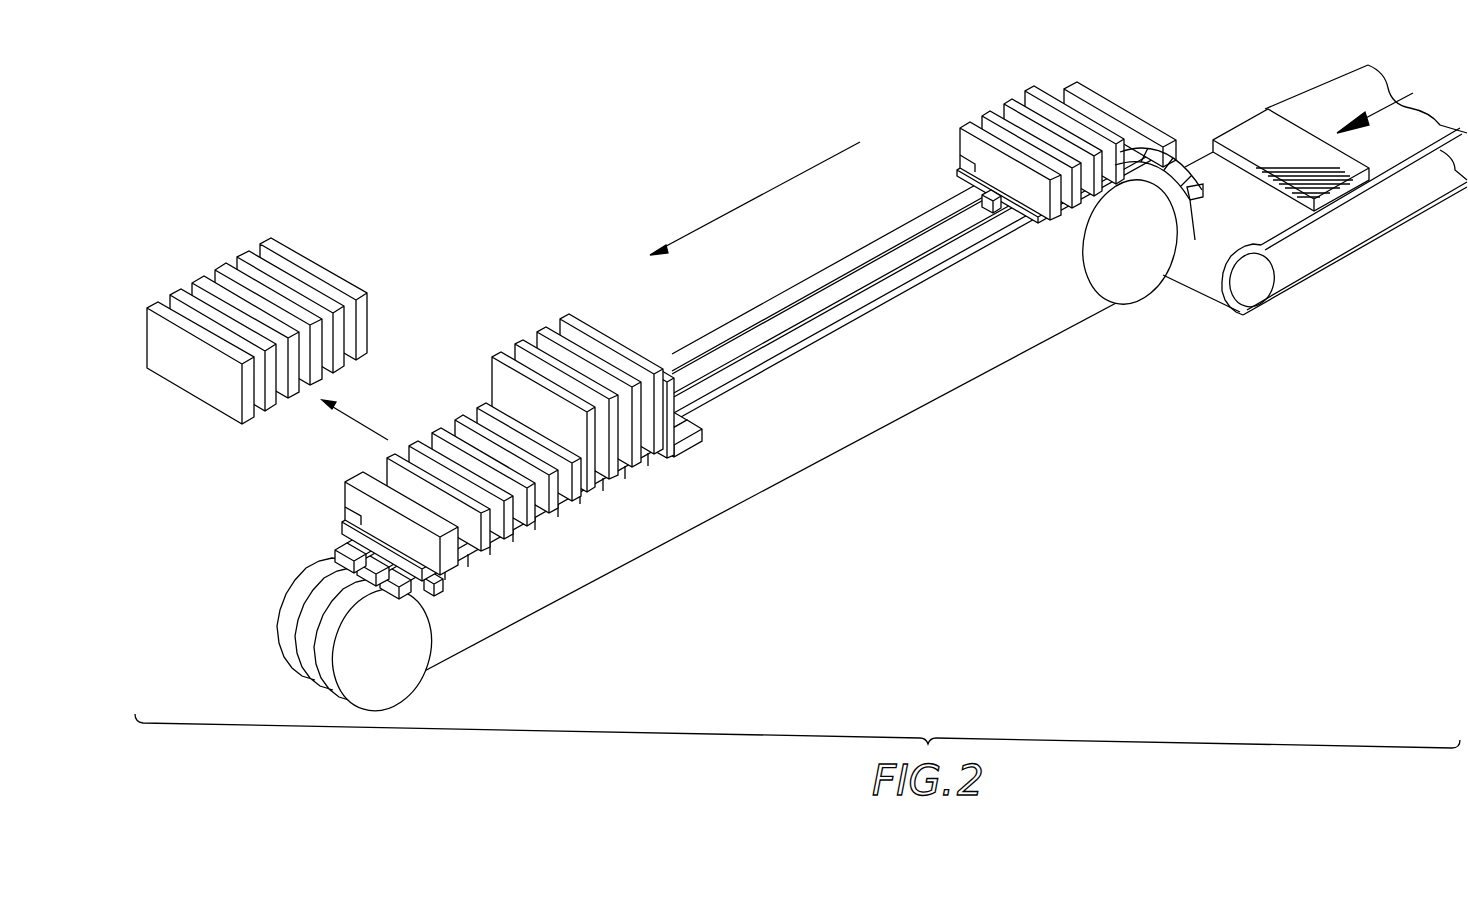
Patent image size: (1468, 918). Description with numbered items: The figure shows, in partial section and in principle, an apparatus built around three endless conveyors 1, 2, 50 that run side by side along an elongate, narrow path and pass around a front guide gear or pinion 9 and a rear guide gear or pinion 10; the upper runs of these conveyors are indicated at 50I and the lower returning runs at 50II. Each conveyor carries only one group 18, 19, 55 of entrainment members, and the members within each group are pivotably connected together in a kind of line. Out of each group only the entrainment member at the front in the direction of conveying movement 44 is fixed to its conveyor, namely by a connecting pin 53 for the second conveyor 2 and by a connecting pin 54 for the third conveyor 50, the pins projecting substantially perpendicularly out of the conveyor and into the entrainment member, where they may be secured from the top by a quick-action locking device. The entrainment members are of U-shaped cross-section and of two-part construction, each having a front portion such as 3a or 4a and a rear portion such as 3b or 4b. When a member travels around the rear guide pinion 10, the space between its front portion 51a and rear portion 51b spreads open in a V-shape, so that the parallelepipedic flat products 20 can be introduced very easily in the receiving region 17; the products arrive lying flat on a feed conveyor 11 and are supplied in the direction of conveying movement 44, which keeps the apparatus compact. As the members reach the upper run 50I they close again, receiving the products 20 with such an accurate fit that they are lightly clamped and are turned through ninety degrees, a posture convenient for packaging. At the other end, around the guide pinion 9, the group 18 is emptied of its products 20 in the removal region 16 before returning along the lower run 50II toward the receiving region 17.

The endless conveyor 1 is at (343, 616).
The endless conveyor 2 is at (328, 582).
The endless conveyor 50 is at (335, 558).
The belt upper runs 50I is at (833, 349).
The belt lower runs 50II is at (887, 435).
The front portion 3a is at (350, 484).
The rear portion 3b is at (572, 504).
The stop block 4a is at (665, 438).
The stop plate 4b is at (678, 421).
The guide gear or pinion 9 is at (413, 660).
The rear guide gear or pinion 10 is at (1122, 278).
The feed conveyor 11 is at (1317, 273).
The removal region 16 is at (452, 248).
The receiving region 17 is at (995, 38).
The group of entrainment members 18 is at (340, 472).
The group of entrainment members 19 is at (588, 512).
The parallelepipedic flat products 20 is at (1279, 140).
The direction of conveying movement 44 is at (772, 188).
The front portion 51a is at (1190, 155).
The rear portion 51b is at (1195, 240).
The connecting pin 53 is at (436, 584).
The connecting pin 54 is at (983, 183).
The group of entrainment members 55 is at (945, 54).